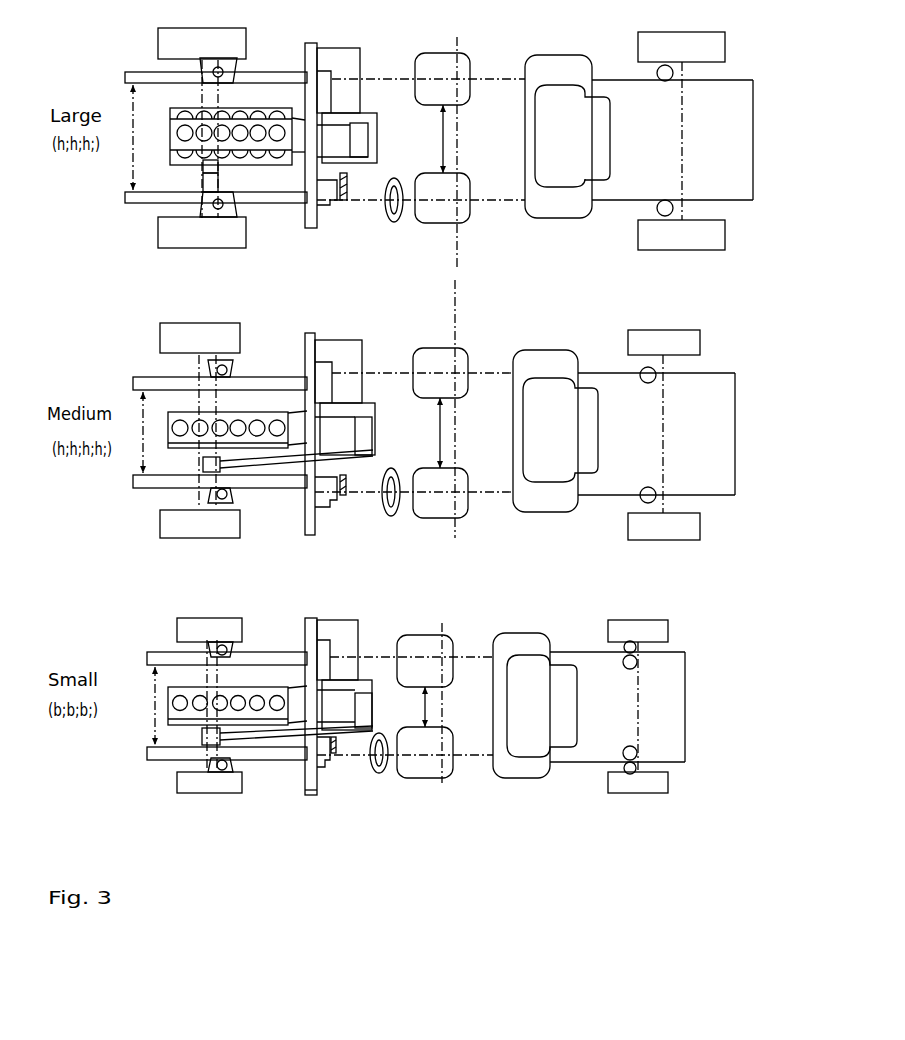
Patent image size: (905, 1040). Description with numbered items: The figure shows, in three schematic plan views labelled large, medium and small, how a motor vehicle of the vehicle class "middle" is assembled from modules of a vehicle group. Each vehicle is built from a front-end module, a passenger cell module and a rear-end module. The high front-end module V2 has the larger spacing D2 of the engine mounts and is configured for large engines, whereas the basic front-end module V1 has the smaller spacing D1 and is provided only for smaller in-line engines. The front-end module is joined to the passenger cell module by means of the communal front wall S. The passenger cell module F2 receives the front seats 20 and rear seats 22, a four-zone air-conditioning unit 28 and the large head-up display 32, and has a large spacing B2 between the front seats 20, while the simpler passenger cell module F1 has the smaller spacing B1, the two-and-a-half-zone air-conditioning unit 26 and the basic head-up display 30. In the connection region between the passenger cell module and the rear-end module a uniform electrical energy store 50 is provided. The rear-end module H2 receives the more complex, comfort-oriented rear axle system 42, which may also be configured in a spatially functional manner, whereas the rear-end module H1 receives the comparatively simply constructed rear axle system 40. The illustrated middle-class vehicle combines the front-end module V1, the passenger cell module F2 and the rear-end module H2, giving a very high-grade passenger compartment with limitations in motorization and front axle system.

The front seats 20 is at (420, 768).
The rear seats 22 is at (508, 766).
The air-conditioning unit 26 is at (342, 632).
The air-conditioning unit 28 is at (345, 60).
The head-up display 30 is at (320, 775).
The head-up display 32 is at (327, 207).
The rear axle system 40 is at (672, 738).
The rear axle system 42 is at (739, 90).
The electrical energy store 50 is at (542, 733).
The front-end module V1 is at (110, 487).
The front-end module V2 is at (272, 60).
The passenger cell module F1 is at (375, 826).
The passenger cell module F2 is at (488, 56).
The rear-end module H1 is at (649, 818).
The rear-end module H2 is at (622, 90).
The spacing between the front seats B1 is at (411, 707).
The spacing between the front seats B2 is at (431, 286).
The spacing of the engine mounts D1 is at (149, 568).
The spacing of the engine mounts D2 is at (133, 137).
The front wall S is at (309, 793).